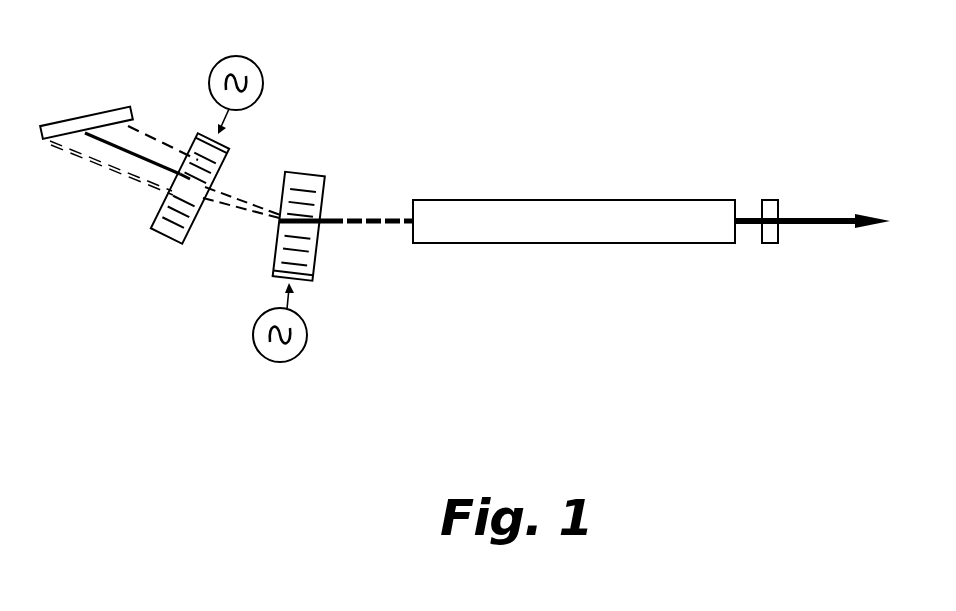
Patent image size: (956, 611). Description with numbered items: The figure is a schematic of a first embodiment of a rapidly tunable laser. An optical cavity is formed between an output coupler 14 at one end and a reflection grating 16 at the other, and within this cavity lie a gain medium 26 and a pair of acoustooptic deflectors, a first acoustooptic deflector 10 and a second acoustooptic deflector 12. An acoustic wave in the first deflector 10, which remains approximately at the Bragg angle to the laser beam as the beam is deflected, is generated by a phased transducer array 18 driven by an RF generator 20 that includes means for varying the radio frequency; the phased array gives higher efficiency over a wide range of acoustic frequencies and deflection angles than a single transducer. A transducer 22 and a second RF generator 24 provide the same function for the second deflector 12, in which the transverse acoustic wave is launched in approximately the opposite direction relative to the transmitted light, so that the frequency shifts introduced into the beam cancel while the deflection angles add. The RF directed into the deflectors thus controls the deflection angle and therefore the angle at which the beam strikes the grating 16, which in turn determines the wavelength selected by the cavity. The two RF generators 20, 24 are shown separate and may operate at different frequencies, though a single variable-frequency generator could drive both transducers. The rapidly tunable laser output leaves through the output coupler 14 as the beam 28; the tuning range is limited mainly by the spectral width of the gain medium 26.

The acoustooptic deflector 10 is at (332, 200).
The acoustooptic deflector 12 is at (184, 139).
The output coupler 14 is at (762, 237).
The reflection grating 16 is at (110, 112).
The phased transducer array 18 is at (301, 288).
The RF generator 20 is at (302, 351).
The transducer 22 is at (228, 132).
The RF generator 24 is at (257, 64).
The gain medium 26 is at (533, 196).
The beam 28 is at (818, 218).